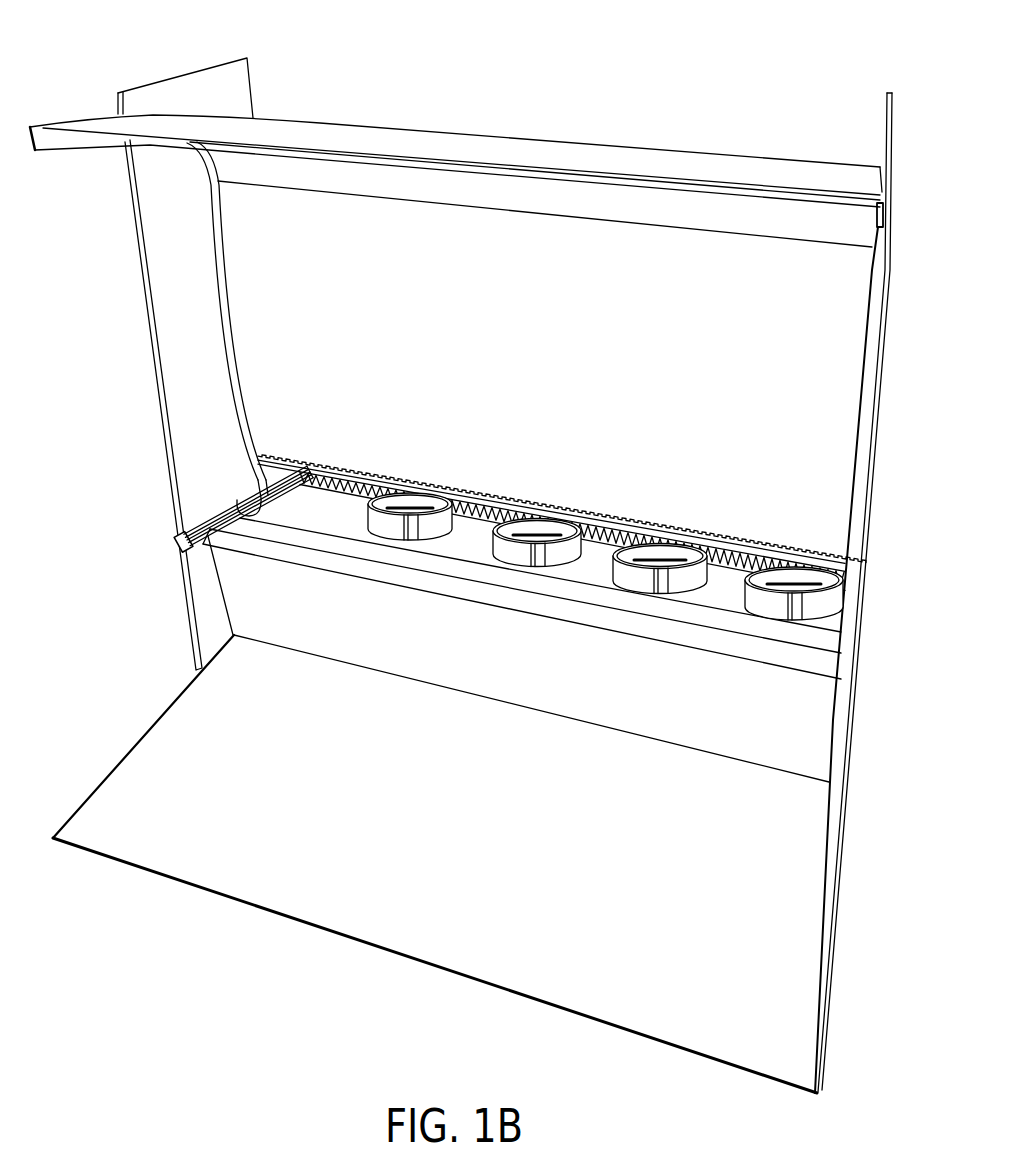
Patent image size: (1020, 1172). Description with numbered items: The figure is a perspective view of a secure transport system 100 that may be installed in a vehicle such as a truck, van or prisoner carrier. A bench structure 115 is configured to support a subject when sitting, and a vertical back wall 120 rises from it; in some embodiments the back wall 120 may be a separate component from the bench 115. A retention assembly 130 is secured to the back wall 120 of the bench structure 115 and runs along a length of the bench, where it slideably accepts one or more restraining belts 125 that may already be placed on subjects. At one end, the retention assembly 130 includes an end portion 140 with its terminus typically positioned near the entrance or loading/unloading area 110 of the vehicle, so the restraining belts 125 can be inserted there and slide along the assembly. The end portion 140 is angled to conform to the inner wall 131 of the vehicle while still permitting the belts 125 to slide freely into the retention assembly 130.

The secure transport system 100 is at (790, 107).
The entrance or loading/unloading area 110 is at (178, 855).
The bench structure 115 is at (822, 723).
The vertical back wall 120 is at (845, 471).
The restraining belts 125 is at (537, 520).
The retention assembly 130 is at (357, 487).
The inner wall 131 is at (170, 390).
The end portion 140 is at (297, 472).